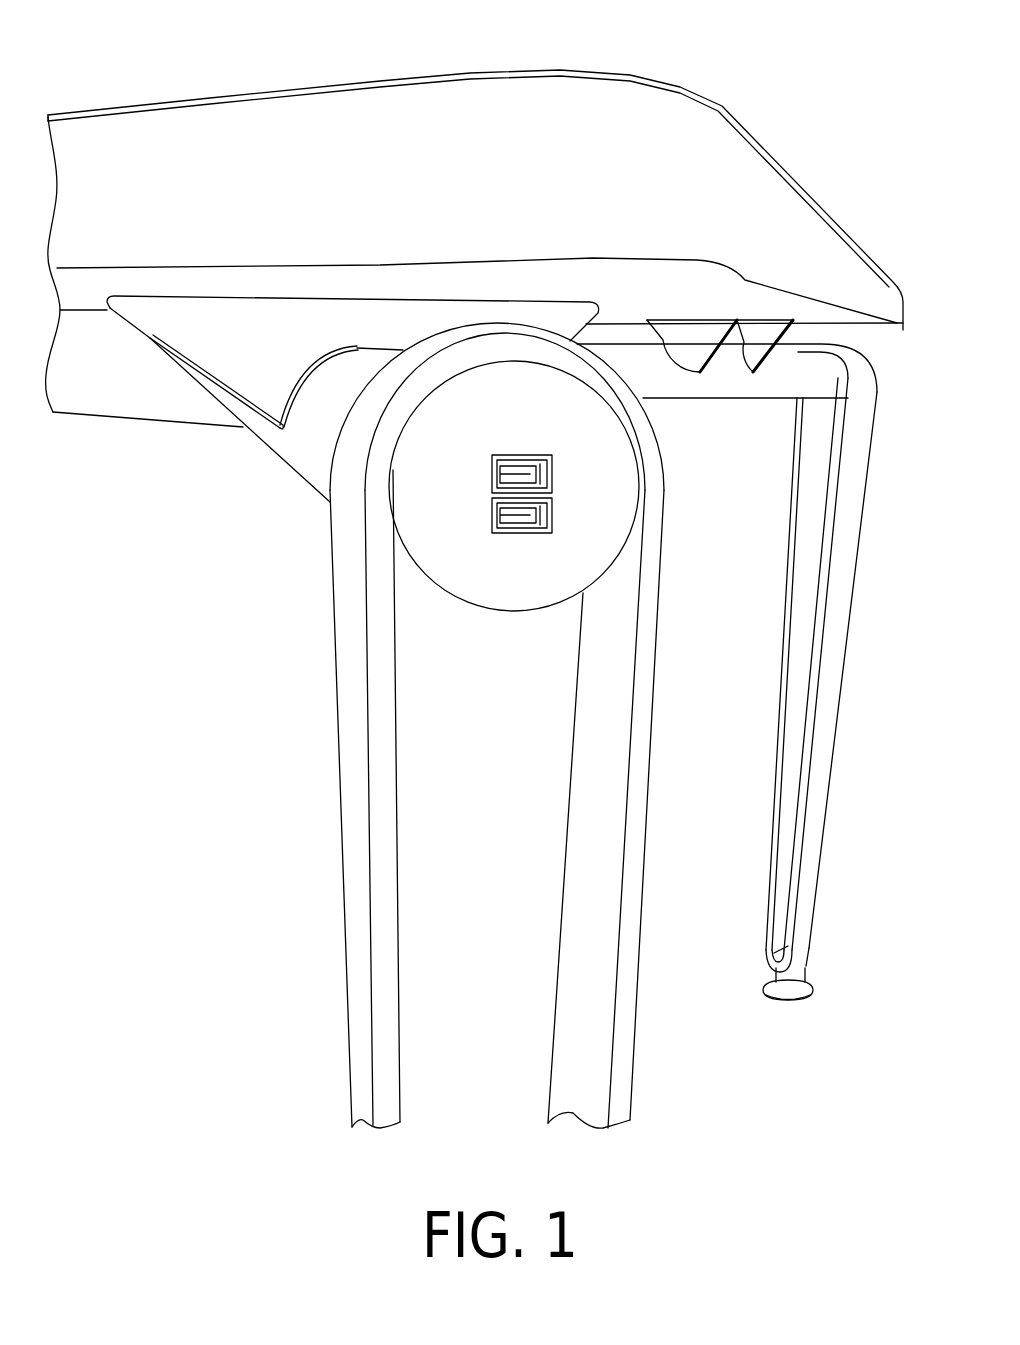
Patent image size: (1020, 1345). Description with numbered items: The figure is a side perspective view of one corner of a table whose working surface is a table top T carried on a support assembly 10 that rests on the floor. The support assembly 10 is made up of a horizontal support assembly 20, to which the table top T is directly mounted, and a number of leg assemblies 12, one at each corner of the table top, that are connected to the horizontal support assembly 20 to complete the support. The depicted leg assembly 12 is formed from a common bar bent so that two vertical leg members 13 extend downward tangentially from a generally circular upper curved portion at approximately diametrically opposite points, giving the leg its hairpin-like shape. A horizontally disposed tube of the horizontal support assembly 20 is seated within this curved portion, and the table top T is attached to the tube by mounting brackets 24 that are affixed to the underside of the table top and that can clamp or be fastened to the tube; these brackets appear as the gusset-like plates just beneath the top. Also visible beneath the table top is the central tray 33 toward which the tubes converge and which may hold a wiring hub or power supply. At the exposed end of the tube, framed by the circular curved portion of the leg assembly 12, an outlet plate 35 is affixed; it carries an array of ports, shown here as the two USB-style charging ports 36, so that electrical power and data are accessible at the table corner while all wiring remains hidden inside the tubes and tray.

The table top T is at (391, 102).
The support assembly 10 is at (661, 667).
The leg assembly 12 is at (652, 864).
The vertical leg members 13 is at (638, 750).
The horizontal support assembly 20 is at (706, 408).
The mounting brackets 24 is at (248, 332).
The central tray 33 is at (108, 393).
The outlet plate 35 is at (460, 568).
The USB charging ports 36 is at (492, 478).